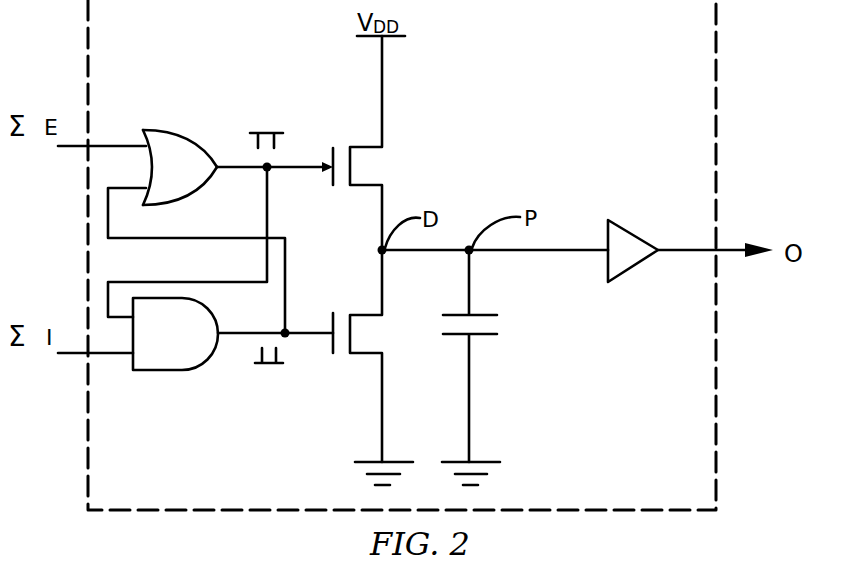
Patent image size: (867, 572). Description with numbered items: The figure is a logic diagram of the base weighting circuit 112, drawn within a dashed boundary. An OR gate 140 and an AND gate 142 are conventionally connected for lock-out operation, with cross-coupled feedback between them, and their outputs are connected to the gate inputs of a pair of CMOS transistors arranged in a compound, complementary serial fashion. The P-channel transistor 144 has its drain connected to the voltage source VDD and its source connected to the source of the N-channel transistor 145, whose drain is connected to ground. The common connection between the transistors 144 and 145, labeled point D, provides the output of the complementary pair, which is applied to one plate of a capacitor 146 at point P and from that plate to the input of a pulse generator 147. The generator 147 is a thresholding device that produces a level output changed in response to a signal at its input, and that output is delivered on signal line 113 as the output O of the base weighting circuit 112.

The base weighting circuit 112 is at (716, 50).
The signal line 113 is at (725, 252).
The OR gate 140 is at (162, 131).
The AND gate 142 is at (165, 372).
The P-channel transistor 144 is at (372, 147).
The N-channel transistor 145 is at (362, 355).
The capacitor 146 is at (485, 336).
The pulse generator 147 is at (638, 263).